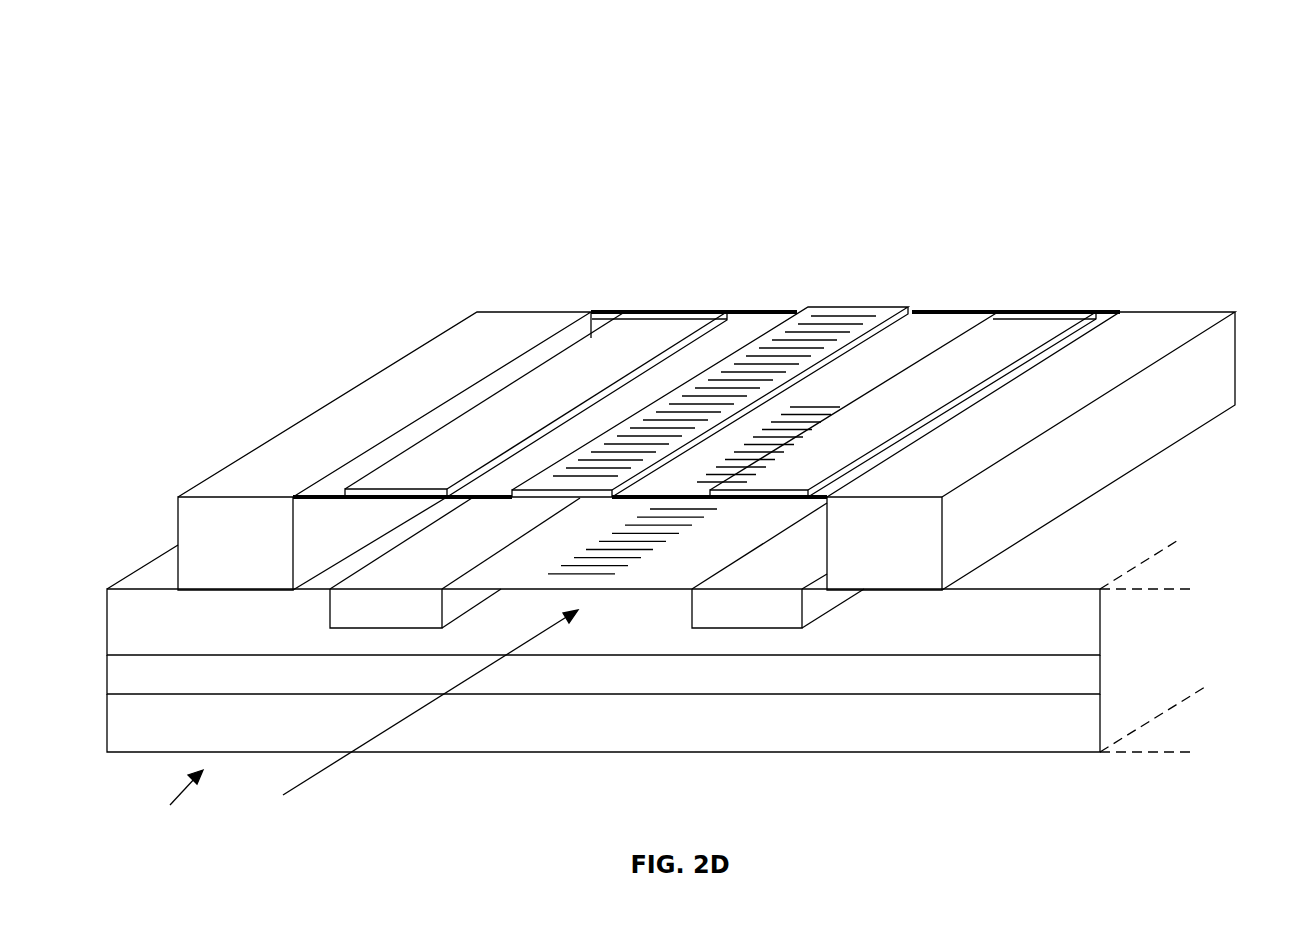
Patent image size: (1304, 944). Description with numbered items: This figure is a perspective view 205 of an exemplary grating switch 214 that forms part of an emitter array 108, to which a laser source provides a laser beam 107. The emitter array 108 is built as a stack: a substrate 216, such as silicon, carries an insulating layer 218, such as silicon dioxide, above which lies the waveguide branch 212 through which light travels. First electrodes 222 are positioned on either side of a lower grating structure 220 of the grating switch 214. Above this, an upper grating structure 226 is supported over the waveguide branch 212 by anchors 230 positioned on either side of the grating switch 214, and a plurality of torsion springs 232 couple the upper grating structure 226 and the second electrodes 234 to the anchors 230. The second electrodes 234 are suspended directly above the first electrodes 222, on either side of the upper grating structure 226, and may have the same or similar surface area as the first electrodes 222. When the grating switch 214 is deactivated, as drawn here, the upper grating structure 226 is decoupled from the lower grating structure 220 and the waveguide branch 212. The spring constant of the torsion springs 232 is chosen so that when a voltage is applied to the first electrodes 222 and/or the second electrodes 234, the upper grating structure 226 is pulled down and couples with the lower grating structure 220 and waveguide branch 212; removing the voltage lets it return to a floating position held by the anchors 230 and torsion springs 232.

The perspective view 205 is at (82, 34).
The grating switch 214 is at (355, 168).
The waveguide branch 212 is at (649, 597).
The insulating layer 218 is at (603, 674).
The substrate 216 is at (656, 719).
The first electrodes 222 is at (597, 563).
The anchors 230 is at (497, 312).
The torsion springs 232 is at (618, 312).
The second electrodes 234 is at (720, 404).
The upper grating structure 226 is at (850, 307).
The lower grating structure 220 is at (548, 574).
The laser beam 107 is at (313, 780).
The emitter array 108 is at (169, 802).